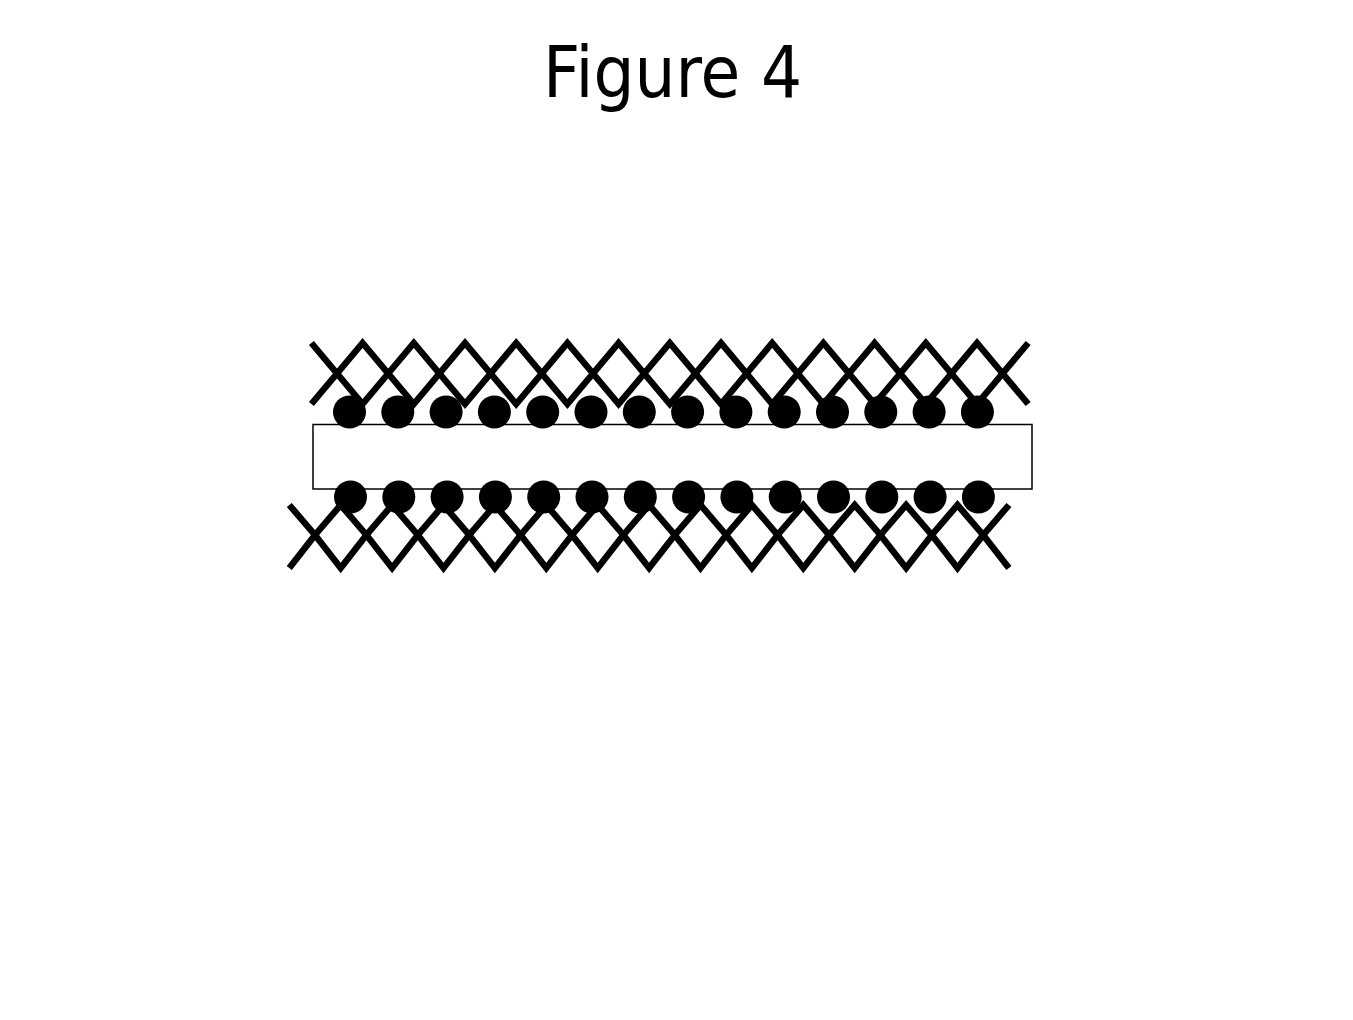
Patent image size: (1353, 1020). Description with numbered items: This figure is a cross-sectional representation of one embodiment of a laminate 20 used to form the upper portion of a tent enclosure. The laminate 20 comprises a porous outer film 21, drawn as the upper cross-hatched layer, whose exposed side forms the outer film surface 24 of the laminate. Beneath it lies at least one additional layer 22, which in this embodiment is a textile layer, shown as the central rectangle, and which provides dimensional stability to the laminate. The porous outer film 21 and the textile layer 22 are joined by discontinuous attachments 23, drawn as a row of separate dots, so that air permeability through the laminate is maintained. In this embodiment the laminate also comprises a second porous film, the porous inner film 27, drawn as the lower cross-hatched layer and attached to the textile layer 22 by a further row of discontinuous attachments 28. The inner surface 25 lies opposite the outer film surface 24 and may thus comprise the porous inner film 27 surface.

The laminate 20 is at (310, 343).
The porous outer film 21 is at (335, 373).
The additional layer 22 is at (375, 455).
The discontinuous attachments 23 is at (992, 410).
The outer film surface 24 is at (1027, 345).
The inner surface 25 is at (918, 578).
The porous inner film 27 is at (292, 568).
The second adhesive particles 28 is at (992, 495).